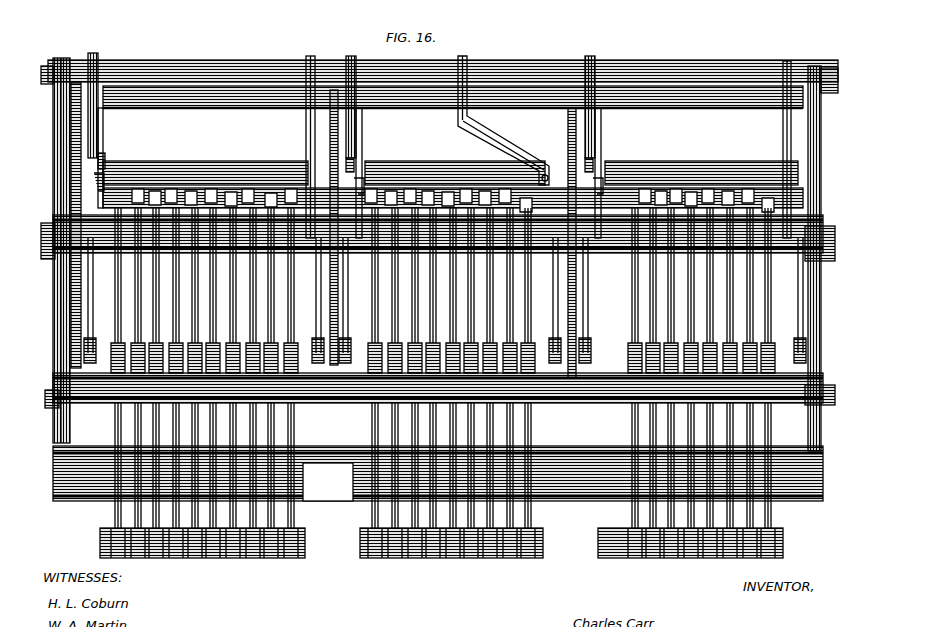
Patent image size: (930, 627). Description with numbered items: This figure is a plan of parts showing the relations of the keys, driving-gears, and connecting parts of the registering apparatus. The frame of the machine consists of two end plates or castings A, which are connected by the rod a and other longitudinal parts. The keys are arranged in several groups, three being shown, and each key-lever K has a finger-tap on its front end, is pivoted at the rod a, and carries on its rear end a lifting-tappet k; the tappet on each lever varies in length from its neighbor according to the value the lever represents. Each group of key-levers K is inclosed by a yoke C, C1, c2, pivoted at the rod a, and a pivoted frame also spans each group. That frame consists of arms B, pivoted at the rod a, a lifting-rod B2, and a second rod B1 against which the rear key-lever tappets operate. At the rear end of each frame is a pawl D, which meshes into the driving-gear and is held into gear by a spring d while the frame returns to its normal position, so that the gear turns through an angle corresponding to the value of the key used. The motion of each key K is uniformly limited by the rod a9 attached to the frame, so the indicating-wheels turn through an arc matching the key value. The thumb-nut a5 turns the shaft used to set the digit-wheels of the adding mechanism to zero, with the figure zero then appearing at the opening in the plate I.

The end plate A is at (46, 281).
The rod a is at (827, 236).
The thumb-nut a5 is at (505, 56).
The rod a9 is at (315, 393).
The arm B is at (95, 122).
The second rod B1 is at (224, 149).
The lifting-rod B2 is at (195, 97).
The yoke C is at (326, 133).
The yoke C1 is at (117, 330).
The yoke c2 is at (86, 178).
The pawl D is at (80, 56).
The spring d is at (95, 148).
The plate I is at (344, 494).
The lifting-tappet k is at (453, 200).
The key-lever K is at (175, 553).